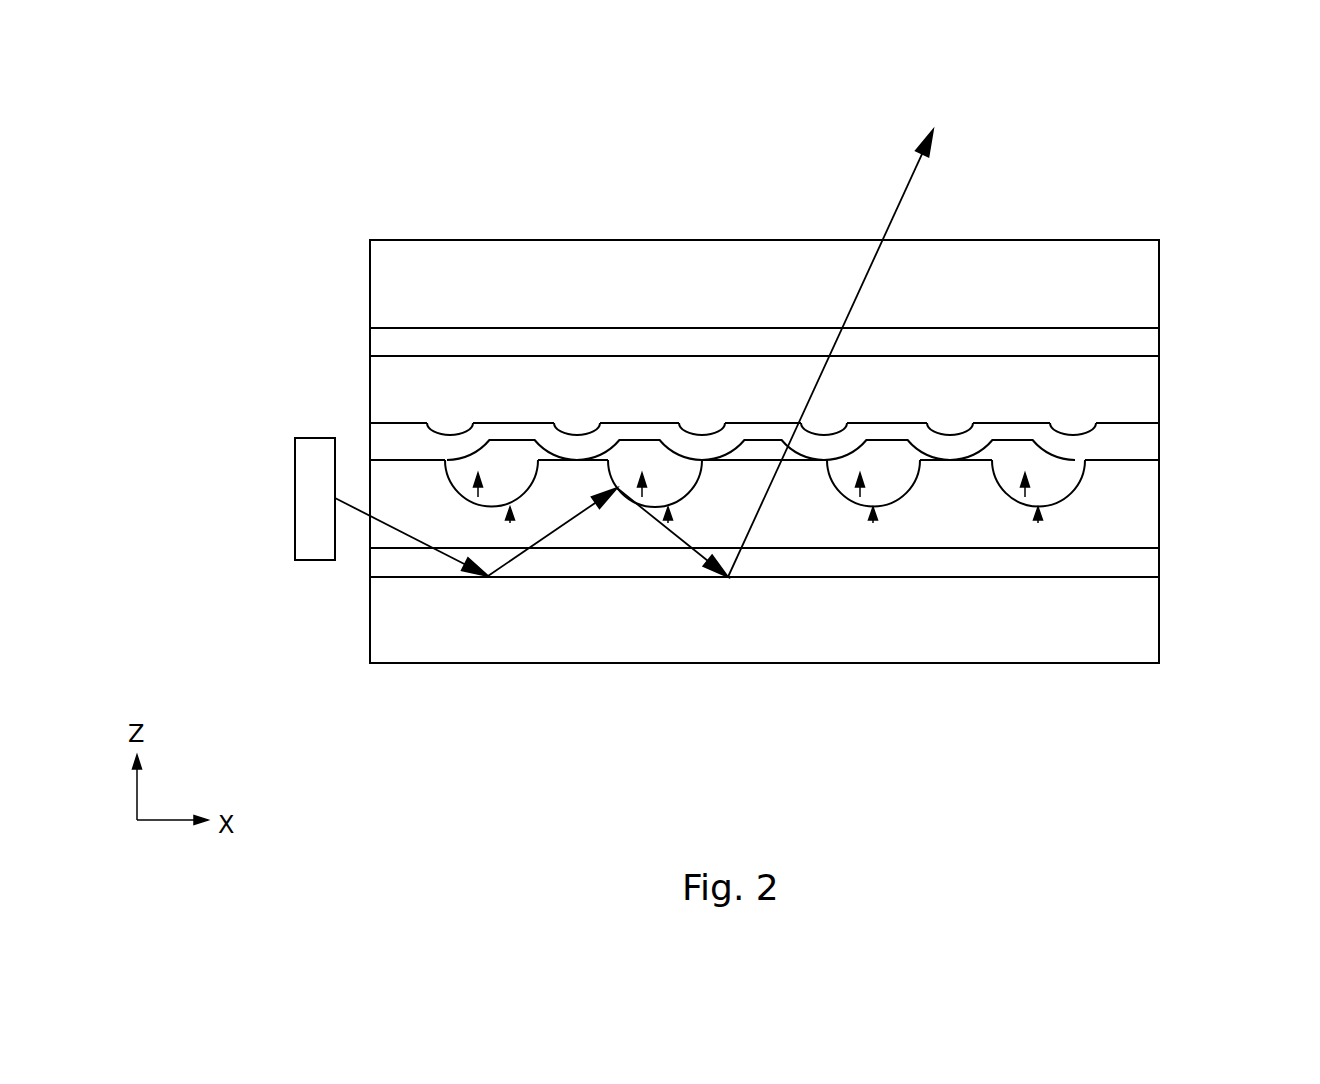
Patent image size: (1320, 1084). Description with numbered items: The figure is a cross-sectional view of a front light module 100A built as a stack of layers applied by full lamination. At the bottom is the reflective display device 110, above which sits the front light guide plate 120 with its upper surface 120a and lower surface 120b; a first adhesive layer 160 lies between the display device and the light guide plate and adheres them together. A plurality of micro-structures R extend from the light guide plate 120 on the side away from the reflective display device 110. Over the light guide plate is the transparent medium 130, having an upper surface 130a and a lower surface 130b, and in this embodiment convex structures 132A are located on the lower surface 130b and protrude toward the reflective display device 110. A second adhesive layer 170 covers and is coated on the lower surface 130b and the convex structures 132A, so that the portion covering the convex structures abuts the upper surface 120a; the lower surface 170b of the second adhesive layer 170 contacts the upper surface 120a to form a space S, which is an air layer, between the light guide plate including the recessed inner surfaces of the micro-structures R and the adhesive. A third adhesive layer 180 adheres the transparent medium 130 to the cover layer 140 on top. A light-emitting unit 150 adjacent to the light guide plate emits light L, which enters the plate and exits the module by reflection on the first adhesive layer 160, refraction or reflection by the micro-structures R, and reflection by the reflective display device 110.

The front light module 100A is at (246, 117).
The reflective display device 110 is at (1145, 620).
The front light guide plate 120 is at (1145, 500).
The upper surface of the front light guide plate 120a is at (575, 460).
The lower surface of the front light guide plate 120b is at (932, 548).
The transparent medium 130 is at (1145, 392).
The upper surface of the transparent medium 130a is at (875, 357).
The lower surface of the transparent medium 130b is at (1015, 423).
The convex structures 132A is at (450, 423).
The cover layer 140 is at (1145, 286).
The light-emitting unit 150 is at (302, 498).
The first adhesive layer 160 is at (1145, 562).
The second adhesive layer 170 is at (1145, 436).
The lower surface of the second adhesive layer 170b is at (547, 460).
The third adhesive layer 180 is at (1145, 341).
The light L is at (410, 538).
The space S is at (478, 497).
The micro-structures R is at (510, 523).